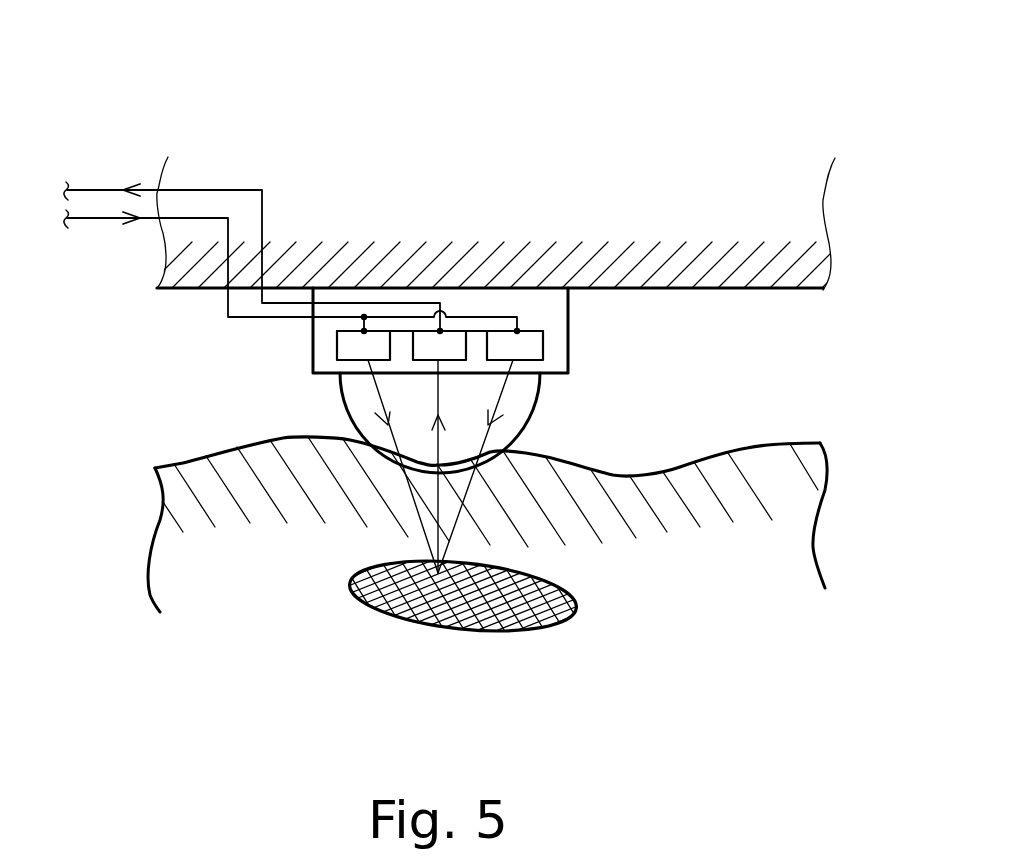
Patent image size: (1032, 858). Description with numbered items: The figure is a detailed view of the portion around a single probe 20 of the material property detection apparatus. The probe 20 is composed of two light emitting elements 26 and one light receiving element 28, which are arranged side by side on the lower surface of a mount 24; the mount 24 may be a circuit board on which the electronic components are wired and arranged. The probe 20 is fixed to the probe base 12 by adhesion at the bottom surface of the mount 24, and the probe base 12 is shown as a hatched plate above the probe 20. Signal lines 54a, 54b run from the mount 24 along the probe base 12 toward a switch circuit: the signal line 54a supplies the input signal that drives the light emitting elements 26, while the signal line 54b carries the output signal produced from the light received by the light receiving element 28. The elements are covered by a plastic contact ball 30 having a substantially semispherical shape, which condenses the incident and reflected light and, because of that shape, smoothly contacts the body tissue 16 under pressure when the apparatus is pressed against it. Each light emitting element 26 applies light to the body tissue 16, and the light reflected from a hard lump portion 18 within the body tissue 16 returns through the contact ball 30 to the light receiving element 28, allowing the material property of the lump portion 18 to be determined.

The probe base 12 is at (763, 193).
The body tissue 16 is at (183, 510).
The hard lump portion 18 is at (372, 605).
The probe 20 is at (97, 302).
The mount 24 is at (327, 325).
The light emitting element 26 is at (345, 346).
The light receiving element 28 is at (428, 350).
The contact ball 30 is at (362, 420).
The signal line 54a is at (92, 218).
The signal line 54b is at (108, 190).